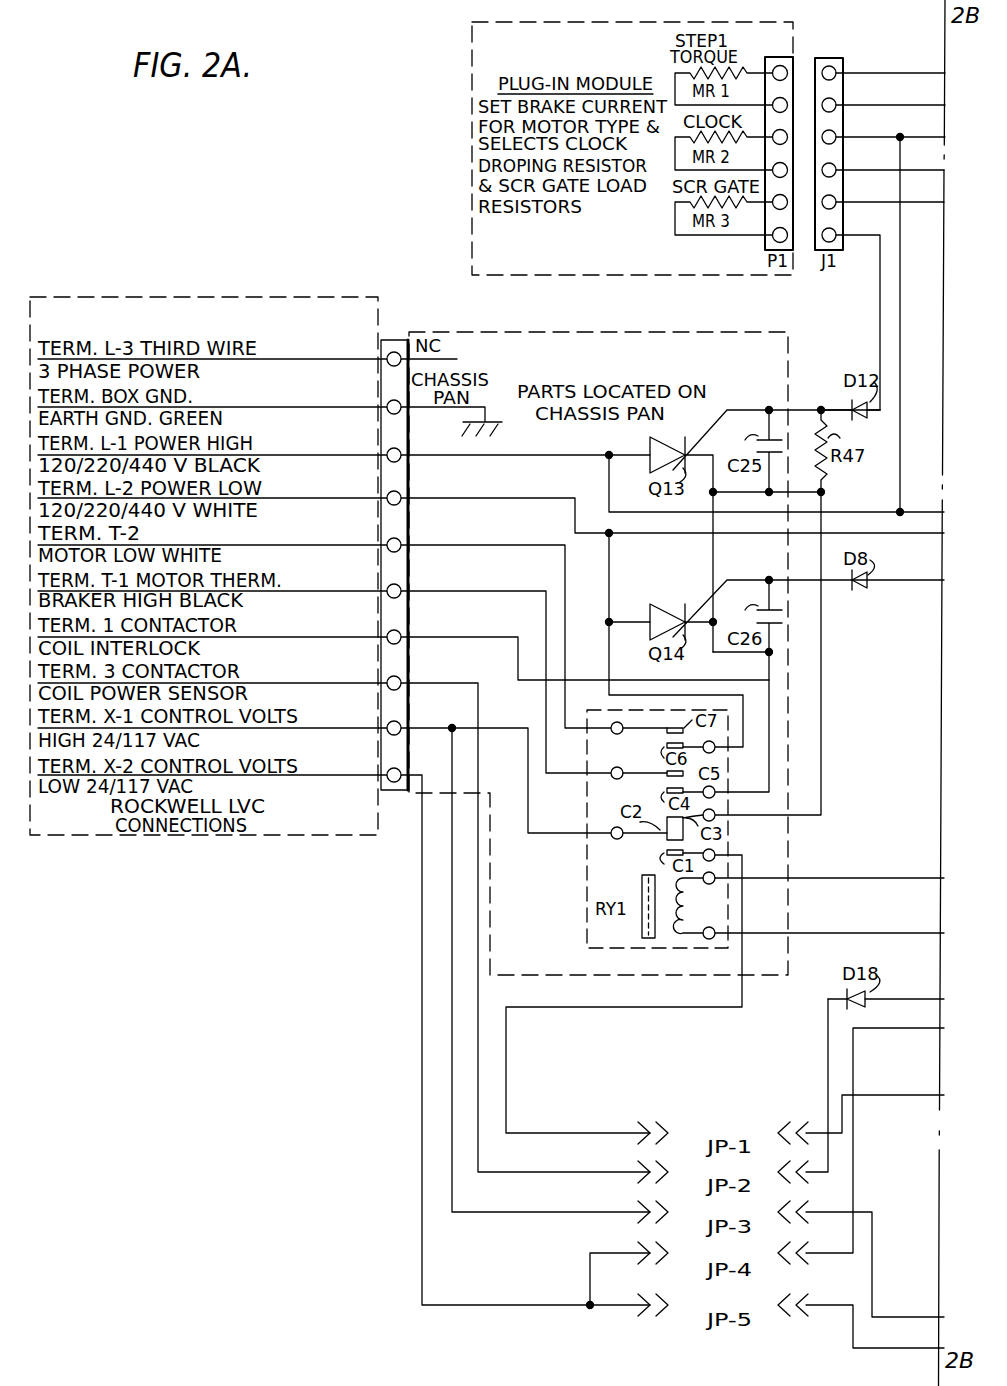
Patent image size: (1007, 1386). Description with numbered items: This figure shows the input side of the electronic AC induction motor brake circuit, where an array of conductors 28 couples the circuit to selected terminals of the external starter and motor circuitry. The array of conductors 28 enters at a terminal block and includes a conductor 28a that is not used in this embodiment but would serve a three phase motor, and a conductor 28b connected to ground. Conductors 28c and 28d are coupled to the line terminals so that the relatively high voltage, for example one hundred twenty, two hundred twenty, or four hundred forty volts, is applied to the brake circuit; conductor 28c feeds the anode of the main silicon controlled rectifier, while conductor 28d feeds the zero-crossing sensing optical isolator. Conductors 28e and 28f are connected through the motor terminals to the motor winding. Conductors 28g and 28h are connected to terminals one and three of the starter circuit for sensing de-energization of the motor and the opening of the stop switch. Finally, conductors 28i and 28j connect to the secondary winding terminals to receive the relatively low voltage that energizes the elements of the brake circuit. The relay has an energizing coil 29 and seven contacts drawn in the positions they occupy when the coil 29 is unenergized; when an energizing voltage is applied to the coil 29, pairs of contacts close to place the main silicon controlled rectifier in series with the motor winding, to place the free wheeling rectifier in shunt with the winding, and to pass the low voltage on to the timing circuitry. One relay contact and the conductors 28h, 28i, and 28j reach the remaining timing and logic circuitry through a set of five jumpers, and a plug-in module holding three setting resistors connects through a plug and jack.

The array of conductors 28 is at (330, 775).
The conductor 28a is at (373, 356).
The conductor 28b is at (376, 405).
The conductor 28c is at (376, 452).
The conductor 28d is at (376, 496).
The conductor 28e is at (376, 543).
The conductor 28f is at (376, 589).
The conductor 28g is at (376, 634).
The conductor 28h is at (376, 681).
The conductor 28i is at (376, 726).
The conductor 28j is at (376, 773).
The energizing coil 29 is at (688, 920).